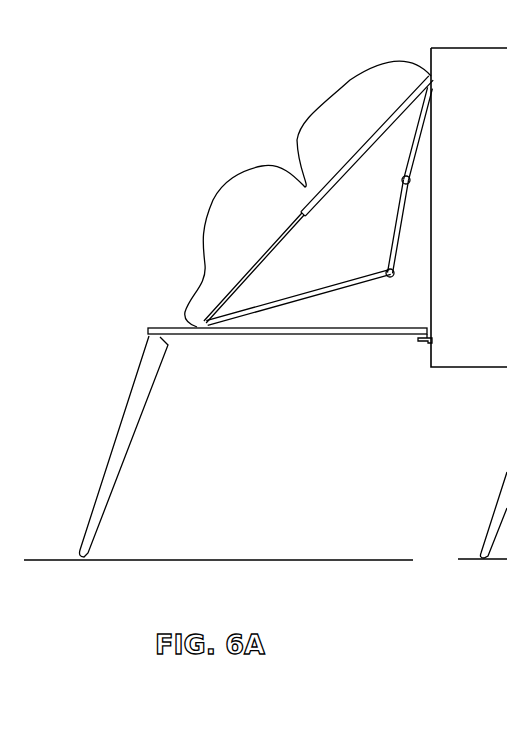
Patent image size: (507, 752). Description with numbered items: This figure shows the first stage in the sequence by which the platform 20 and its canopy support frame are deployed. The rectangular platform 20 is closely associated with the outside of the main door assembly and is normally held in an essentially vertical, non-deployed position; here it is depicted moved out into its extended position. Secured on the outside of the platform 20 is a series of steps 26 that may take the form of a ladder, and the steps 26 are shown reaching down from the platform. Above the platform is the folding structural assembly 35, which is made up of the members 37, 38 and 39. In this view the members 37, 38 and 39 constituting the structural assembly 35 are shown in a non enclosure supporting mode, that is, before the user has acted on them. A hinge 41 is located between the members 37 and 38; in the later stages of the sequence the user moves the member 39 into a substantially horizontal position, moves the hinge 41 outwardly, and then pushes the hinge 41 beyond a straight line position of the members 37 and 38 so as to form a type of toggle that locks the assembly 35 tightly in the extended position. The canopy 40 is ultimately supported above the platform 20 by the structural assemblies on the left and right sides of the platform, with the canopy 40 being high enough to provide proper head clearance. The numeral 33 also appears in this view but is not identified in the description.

The platform 20 is at (253, 335).
The steps 26 is at (99, 510).
The backrest support link 33 is at (350, 172).
The structural assembly 35 is at (316, 298).
The member 37 is at (340, 289).
The member 38 is at (399, 234).
The member 39 is at (415, 150).
The canopy 40 is at (232, 174).
The hinge 41 is at (397, 277).